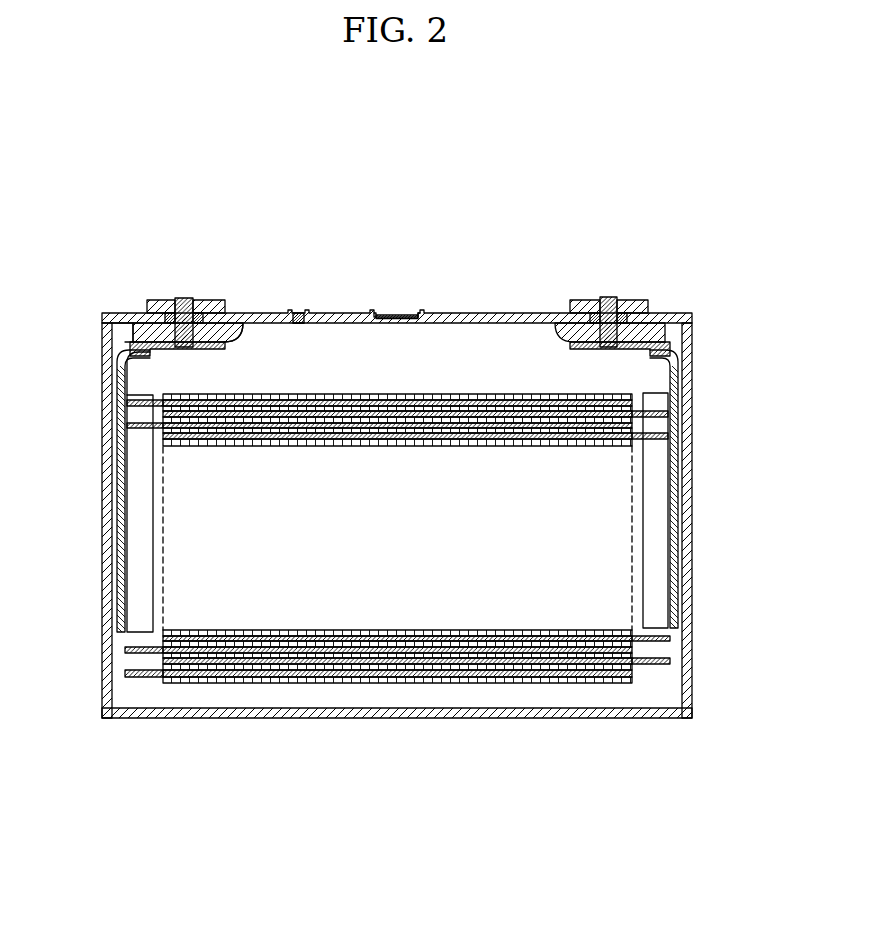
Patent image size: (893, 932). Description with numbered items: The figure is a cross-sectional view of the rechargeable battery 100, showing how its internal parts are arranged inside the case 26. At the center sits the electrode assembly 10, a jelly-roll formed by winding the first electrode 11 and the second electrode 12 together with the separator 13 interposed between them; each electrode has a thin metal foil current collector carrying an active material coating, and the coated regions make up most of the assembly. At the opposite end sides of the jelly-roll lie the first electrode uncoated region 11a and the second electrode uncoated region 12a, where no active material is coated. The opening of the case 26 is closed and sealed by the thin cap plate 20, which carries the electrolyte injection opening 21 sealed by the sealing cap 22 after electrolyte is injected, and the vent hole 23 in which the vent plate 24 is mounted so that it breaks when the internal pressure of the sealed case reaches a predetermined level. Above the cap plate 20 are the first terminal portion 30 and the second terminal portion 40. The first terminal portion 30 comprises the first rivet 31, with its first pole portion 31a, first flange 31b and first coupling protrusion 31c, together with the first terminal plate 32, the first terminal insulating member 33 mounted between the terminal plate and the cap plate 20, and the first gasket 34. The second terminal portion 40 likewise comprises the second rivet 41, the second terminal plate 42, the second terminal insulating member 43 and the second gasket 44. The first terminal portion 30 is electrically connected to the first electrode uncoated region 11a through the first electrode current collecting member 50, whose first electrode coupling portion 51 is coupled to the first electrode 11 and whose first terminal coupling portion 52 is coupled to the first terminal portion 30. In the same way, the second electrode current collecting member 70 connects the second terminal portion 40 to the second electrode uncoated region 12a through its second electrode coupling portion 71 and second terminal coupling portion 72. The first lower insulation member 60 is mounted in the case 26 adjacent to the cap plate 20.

The rechargeable battery 100 is at (422, 165).
The electrode assembly 10 is at (396, 586).
The first electrode 11 is at (215, 678).
The first electrode uncoated region 11a is at (133, 680).
The second electrode 12 is at (285, 665).
The second electrode uncoated region 12a is at (648, 665).
The separator 13 is at (400, 652).
The cap plate 20 is at (451, 312).
The electrolyte injection opening 21 is at (301, 324).
The sealing cap 22 is at (297, 313).
The vent hole 23 is at (392, 320).
The vent plate 24 is at (398, 315).
The case 26 is at (690, 580).
The first terminal portion 30 is at (220, 299).
The first rivet 31 is at (211, 312).
The first pole portion 31a is at (191, 347).
The first flange 31b is at (241, 340).
The first coupling protrusion 31c is at (185, 348).
The first terminal plate 32 is at (214, 300).
The first terminal insulating member 33 is at (232, 310).
The first gasket 34 is at (172, 300).
The second terminal portion 40 is at (614, 284).
The second rivet 41 is at (601, 298).
The second terminal plate 42 is at (625, 300).
The second terminal insulating member 43 is at (650, 310).
The second gasket 44 is at (573, 300).
The first electrode current collecting member 50 is at (98, 491).
The first electrode coupling portion 51 is at (135, 520).
The first terminal coupling portion 52 is at (126, 362).
The first lower insulation member 60 is at (118, 333).
The second electrode current collecting member 70 is at (697, 489).
The second electrode coupling portion 71 is at (656, 537).
The second terminal coupling portion 72 is at (677, 380).